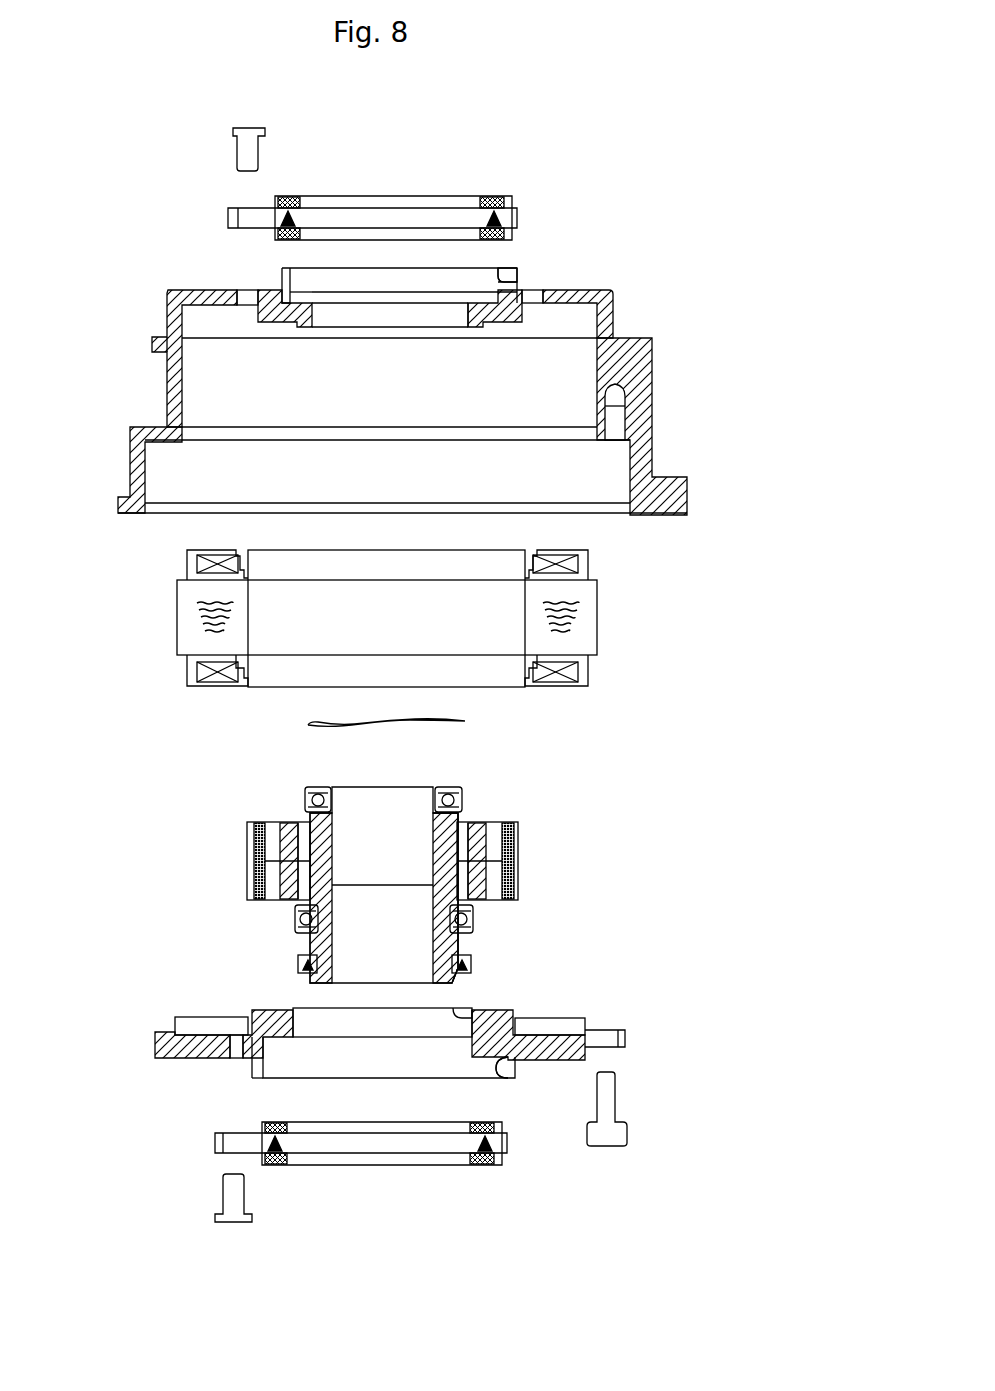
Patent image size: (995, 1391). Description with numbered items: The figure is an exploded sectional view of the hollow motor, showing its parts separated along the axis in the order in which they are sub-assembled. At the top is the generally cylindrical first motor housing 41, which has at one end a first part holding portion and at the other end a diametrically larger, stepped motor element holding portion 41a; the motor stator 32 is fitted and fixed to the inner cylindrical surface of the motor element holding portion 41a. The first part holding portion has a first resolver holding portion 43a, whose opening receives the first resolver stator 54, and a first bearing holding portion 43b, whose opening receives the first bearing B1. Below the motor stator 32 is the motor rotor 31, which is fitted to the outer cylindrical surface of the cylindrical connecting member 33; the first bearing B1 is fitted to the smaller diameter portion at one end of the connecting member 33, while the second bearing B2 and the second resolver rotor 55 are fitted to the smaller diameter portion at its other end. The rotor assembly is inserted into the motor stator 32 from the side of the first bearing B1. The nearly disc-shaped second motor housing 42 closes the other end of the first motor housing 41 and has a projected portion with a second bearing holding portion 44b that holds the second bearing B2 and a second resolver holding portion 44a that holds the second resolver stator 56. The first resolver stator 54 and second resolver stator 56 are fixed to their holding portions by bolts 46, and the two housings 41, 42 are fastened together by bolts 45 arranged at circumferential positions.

The motor rotor 31 is at (520, 858).
The motor stator 32 is at (582, 620).
The connecting member 33 is at (460, 820).
The first motor housing 41 is at (625, 360).
The motor element holding portion 41a is at (182, 402).
The second motor housing 42 is at (160, 1045).
The first resolver holding portion 43a is at (504, 280).
The first bearing holding portion 43b is at (470, 327).
The second resolver holding portion 44a is at (500, 1070).
The second bearing holding portion 44b is at (458, 1008).
The bolts 45 is at (605, 1135).
The bolts 46 is at (246, 150).
The first resolver stator 54 is at (510, 218).
The second resolver rotor 55 is at (472, 960).
The second resolver stator 56 is at (500, 1143).
The first bearing B1 is at (305, 796).
The second bearing B2 is at (298, 918).